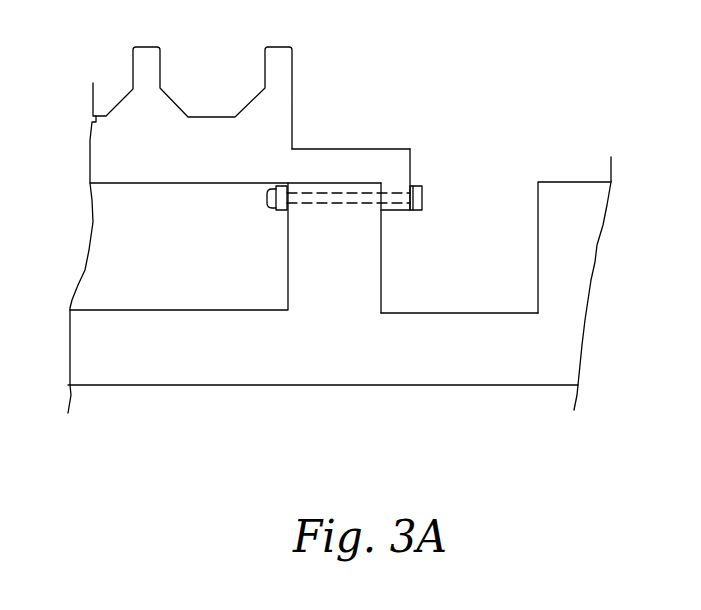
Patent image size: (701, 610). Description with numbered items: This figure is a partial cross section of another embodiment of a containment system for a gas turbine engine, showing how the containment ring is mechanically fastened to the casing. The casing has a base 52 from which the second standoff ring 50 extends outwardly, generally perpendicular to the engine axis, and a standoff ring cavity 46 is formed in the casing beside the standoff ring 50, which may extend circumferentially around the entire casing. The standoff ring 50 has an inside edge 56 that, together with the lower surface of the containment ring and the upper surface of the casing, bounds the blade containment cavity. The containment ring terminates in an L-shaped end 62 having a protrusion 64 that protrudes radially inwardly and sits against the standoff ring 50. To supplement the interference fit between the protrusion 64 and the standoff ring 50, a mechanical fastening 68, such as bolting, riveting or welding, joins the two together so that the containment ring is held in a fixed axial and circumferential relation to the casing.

The standoff ring cavity 46 is at (483, 258).
The second standoff ring 50 is at (326, 223).
The base 52 is at (470, 313).
The inside edge 56 is at (288, 268).
The L-shaped end 62 is at (377, 148).
The protrusion 64 is at (411, 167).
The mechanical fastening 68 is at (423, 197).